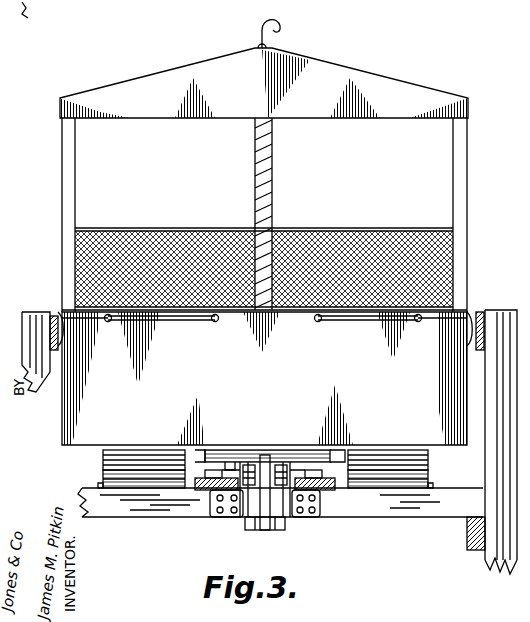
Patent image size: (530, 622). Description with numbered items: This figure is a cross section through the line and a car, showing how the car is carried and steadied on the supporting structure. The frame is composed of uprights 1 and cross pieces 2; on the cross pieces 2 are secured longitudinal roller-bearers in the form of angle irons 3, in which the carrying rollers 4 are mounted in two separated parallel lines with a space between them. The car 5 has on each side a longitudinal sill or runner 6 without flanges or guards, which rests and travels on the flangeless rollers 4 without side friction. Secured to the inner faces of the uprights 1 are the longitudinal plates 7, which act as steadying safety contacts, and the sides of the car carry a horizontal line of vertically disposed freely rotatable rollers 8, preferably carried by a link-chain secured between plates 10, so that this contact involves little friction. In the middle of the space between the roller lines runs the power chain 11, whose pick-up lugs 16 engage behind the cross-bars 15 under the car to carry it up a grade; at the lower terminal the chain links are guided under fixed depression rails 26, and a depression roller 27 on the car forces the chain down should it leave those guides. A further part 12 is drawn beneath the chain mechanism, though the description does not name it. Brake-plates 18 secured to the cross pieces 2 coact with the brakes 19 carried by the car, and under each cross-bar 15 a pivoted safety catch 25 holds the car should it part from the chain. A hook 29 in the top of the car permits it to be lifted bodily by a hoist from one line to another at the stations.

The uprights 1 is at (500, 322).
The cross pieces 2 is at (393, 509).
The angle irons 3 is at (100, 486).
The carrying rollers 4 is at (145, 481).
The car 5 is at (264, 215).
The longitudinal sill or runner 6 is at (135, 462).
The longitudinal plates 7 is at (49, 322).
The freely rotatable rollers 8 is at (64, 332).
The plates 10 is at (58, 316).
The power chain 11 is at (300, 468).
The nut 12 is at (283, 509).
The cross-bars 15 is at (342, 462).
The pick-up lugs 16 is at (274, 470).
The brake-plates 18 is at (207, 489).
The brakes 19 is at (212, 477).
The safety catch 25 is at (263, 475).
The fixed depression rails 26 is at (248, 465).
The depression roller 27 is at (232, 452).
The hooks 29 is at (274, 28).